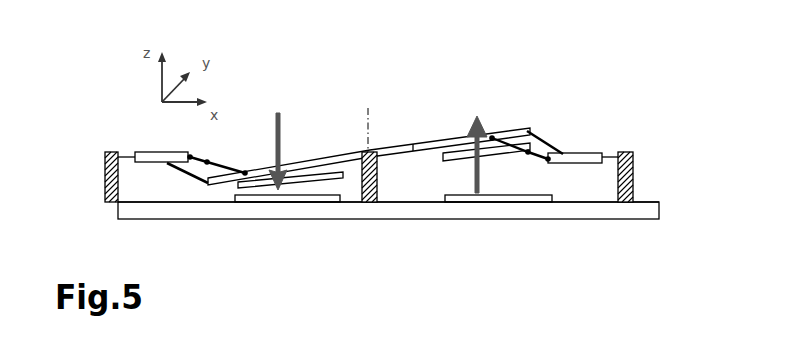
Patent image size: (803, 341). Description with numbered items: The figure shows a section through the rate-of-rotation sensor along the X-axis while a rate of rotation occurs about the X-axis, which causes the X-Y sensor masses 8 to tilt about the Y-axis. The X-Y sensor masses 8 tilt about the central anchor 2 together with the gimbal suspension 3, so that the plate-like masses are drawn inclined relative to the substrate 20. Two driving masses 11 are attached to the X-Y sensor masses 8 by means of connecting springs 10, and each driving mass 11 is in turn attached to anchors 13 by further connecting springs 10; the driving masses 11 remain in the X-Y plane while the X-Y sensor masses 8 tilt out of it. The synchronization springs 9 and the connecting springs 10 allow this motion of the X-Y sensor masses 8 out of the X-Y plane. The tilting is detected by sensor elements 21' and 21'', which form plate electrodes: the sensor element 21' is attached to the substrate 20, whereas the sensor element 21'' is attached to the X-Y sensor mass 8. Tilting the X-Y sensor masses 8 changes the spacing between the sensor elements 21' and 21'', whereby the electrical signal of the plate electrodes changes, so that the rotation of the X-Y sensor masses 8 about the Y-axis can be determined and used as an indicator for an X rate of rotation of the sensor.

The central anchor 2 is at (393, 202).
The gimbal suspension 3 is at (408, 138).
The X-Y sensor mass 8 is at (316, 168).
The synchronization spring 9 is at (252, 158).
The connecting spring 10 is at (216, 168).
The driving mass 11 is at (170, 151).
The anchor 13 is at (133, 185).
The substrate 20 is at (615, 202).
The sensor element 21' is at (394, 248).
The sensor element 21'' is at (418, 101).